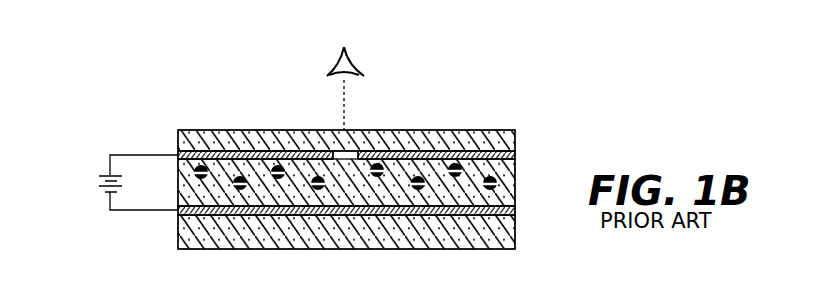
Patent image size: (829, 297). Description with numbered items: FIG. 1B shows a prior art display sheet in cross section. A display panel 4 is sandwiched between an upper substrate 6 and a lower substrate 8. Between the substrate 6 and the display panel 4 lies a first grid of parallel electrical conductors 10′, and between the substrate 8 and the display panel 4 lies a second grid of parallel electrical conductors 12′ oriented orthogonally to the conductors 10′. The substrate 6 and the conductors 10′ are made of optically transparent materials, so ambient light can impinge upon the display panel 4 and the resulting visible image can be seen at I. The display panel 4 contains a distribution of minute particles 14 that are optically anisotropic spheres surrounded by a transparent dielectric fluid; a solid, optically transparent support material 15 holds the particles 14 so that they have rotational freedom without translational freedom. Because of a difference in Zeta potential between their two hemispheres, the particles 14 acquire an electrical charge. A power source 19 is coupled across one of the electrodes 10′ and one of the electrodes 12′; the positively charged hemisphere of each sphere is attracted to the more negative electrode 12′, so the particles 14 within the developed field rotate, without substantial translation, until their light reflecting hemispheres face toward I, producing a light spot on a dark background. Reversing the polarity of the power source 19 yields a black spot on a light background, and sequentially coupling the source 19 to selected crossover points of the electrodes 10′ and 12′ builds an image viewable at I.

The display panel 4 is at (178, 198).
The substrate 6 is at (483, 142).
The substrate 8 is at (516, 232).
The electrical conductors 10′ is at (243, 148).
The electrical conductors 12′ is at (516, 210).
The particles 14 is at (454, 165).
The support material 15 is at (516, 183).
The power source 19 is at (97, 178).
The visible image I is at (350, 63).